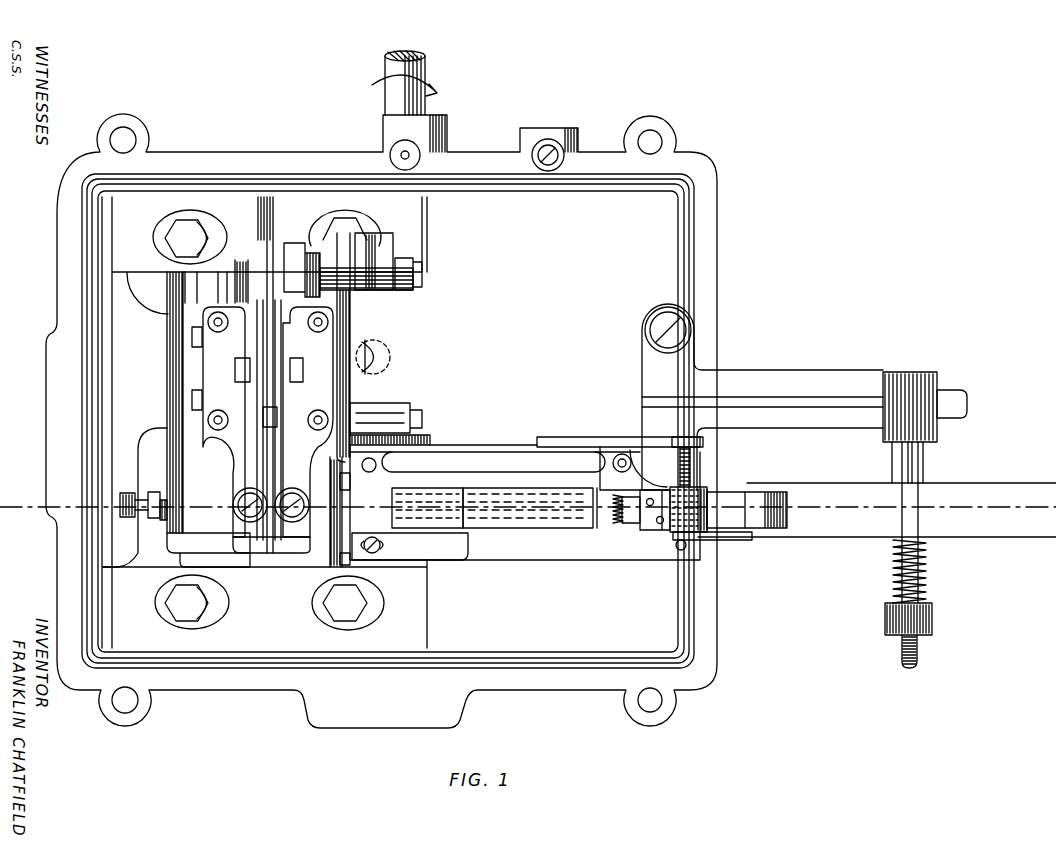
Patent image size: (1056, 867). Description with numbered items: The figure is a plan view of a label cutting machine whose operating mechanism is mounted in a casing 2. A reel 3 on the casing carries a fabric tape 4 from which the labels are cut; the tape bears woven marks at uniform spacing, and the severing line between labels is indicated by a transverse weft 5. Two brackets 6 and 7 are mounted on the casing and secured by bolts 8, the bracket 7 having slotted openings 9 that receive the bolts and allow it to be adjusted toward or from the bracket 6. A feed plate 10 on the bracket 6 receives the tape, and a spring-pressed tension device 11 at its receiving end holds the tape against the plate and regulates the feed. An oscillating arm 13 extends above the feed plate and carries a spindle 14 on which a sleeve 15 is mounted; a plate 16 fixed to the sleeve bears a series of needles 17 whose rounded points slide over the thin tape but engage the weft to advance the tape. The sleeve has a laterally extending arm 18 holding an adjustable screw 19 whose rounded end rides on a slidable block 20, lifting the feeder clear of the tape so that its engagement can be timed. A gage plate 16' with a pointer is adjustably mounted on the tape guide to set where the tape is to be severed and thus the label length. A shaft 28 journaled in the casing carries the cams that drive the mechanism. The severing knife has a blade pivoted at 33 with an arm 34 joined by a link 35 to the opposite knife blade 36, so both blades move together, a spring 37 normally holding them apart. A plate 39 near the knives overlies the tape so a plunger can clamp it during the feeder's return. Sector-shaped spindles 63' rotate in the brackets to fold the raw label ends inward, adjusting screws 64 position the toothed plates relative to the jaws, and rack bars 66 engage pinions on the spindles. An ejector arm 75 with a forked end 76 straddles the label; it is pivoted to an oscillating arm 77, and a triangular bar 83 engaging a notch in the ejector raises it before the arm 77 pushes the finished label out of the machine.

The casing 2 is at (381, 401).
The reel 3 is at (858, 538).
The tape 4 is at (560, 522).
The weft 5 is at (592, 530).
The bracket 6 is at (325, 343).
The bracket 7 is at (205, 366).
The bolts 8 is at (378, 604).
The slotted openings 9 is at (230, 593).
The feed plate 10 is at (498, 560).
The spring-pressed tension device 11 is at (748, 495).
The arm 13 is at (568, 437).
The spindle 14 is at (692, 468).
The sleeve 15 is at (703, 492).
The plate 16 is at (646, 522).
The gage plate 16' is at (410, 560).
The needles 17 is at (620, 525).
The laterally extending arm 18 is at (637, 457).
The screw 19 is at (613, 470).
The block 20 is at (612, 452).
The shaft 28 is at (426, 67).
The pivot 33 is at (404, 276).
The arm 34 is at (388, 250).
The link 35 is at (376, 236).
The knife blade 36 is at (352, 412).
The spring 37 is at (390, 355).
The plate 39 is at (367, 493).
The spindles 63' is at (317, 521).
The adjusting screws 64 is at (124, 495).
The rack bars 66 is at (290, 370).
The ejector arm 75 is at (273, 226).
The forked end 76 is at (268, 535).
The oscillating arm 77 is at (266, 207).
The bar 83 is at (277, 416).